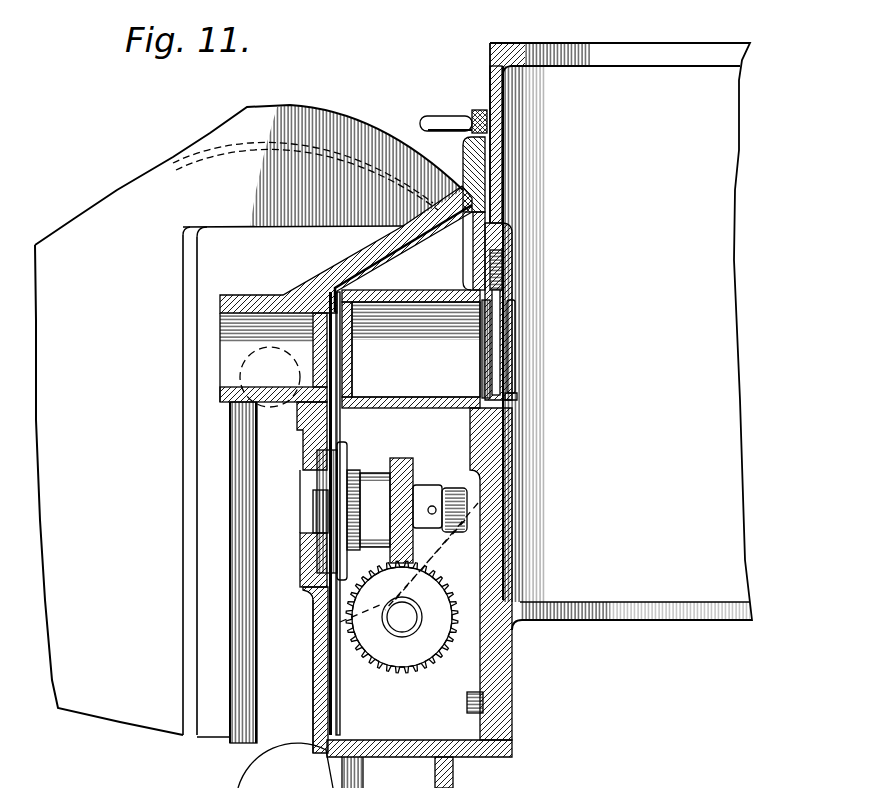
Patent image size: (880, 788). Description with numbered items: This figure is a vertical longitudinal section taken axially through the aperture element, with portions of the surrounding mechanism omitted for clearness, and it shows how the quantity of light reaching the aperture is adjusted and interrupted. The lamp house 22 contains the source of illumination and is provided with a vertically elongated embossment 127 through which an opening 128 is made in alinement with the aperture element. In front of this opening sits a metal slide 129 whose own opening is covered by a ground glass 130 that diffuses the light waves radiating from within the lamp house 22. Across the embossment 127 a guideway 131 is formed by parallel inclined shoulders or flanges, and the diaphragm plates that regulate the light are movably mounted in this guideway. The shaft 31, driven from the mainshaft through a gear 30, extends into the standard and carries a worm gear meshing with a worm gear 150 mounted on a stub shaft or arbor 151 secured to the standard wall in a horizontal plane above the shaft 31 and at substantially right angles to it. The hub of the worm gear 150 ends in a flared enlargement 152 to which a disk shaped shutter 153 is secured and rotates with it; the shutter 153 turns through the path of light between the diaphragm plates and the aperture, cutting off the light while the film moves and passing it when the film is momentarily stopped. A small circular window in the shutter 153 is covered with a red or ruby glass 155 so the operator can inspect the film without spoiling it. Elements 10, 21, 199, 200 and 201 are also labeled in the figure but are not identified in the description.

The housing bracket 10 is at (493, 551).
The circular member 21 is at (320, 753).
The lamp house 22 is at (690, 580).
The gear 30 is at (303, 628).
The shaft 31 is at (233, 382).
The vertically elongated embossment 127 is at (500, 237).
The opening 128 is at (517, 398).
The metal slide 129 is at (485, 160).
The ground glass 130 is at (487, 347).
The guideway 131 is at (502, 278).
The worm gear 150 is at (415, 458).
The stub shaft or arbor 151 is at (310, 515).
The flared enlargement 152 is at (347, 455).
The disk shaped shutter 153 is at (338, 693).
The red or ruby glass 155 is at (347, 362).
The gear 199 is at (423, 657).
The gear hub 200 is at (410, 620).
The stop member 201 is at (450, 655).